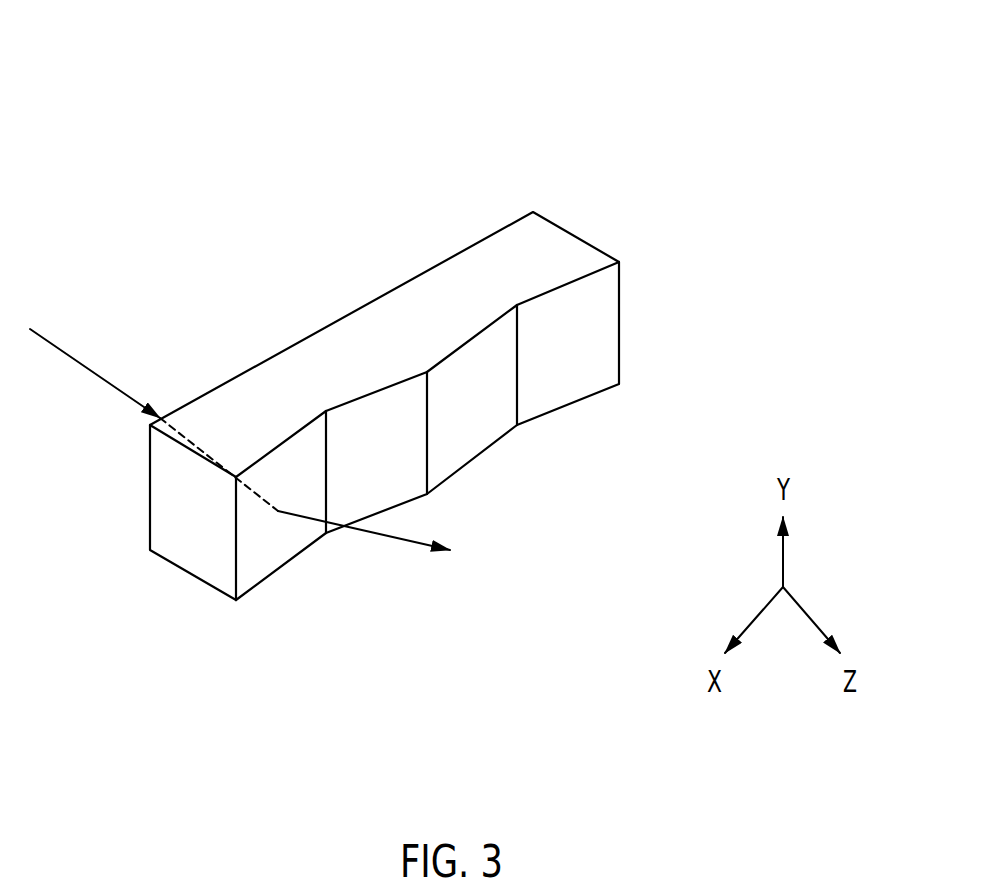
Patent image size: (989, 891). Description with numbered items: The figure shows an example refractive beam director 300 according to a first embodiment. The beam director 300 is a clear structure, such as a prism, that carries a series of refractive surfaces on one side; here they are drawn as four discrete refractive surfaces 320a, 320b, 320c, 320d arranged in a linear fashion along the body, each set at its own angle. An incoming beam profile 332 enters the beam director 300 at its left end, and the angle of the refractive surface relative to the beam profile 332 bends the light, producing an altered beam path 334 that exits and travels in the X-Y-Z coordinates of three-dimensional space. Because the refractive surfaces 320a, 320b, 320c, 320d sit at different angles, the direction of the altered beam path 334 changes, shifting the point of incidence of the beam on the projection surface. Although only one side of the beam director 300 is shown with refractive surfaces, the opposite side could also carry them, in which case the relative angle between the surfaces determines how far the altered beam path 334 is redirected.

The beam director 300 is at (173, 92).
The refractive surface 320a is at (283, 557).
The refractive surface 320b is at (390, 495).
The refractive surface 320c is at (482, 429).
The refractive surface 320d is at (587, 380).
The beam profile 332 is at (87, 365).
The altered beam path 334 is at (363, 532).